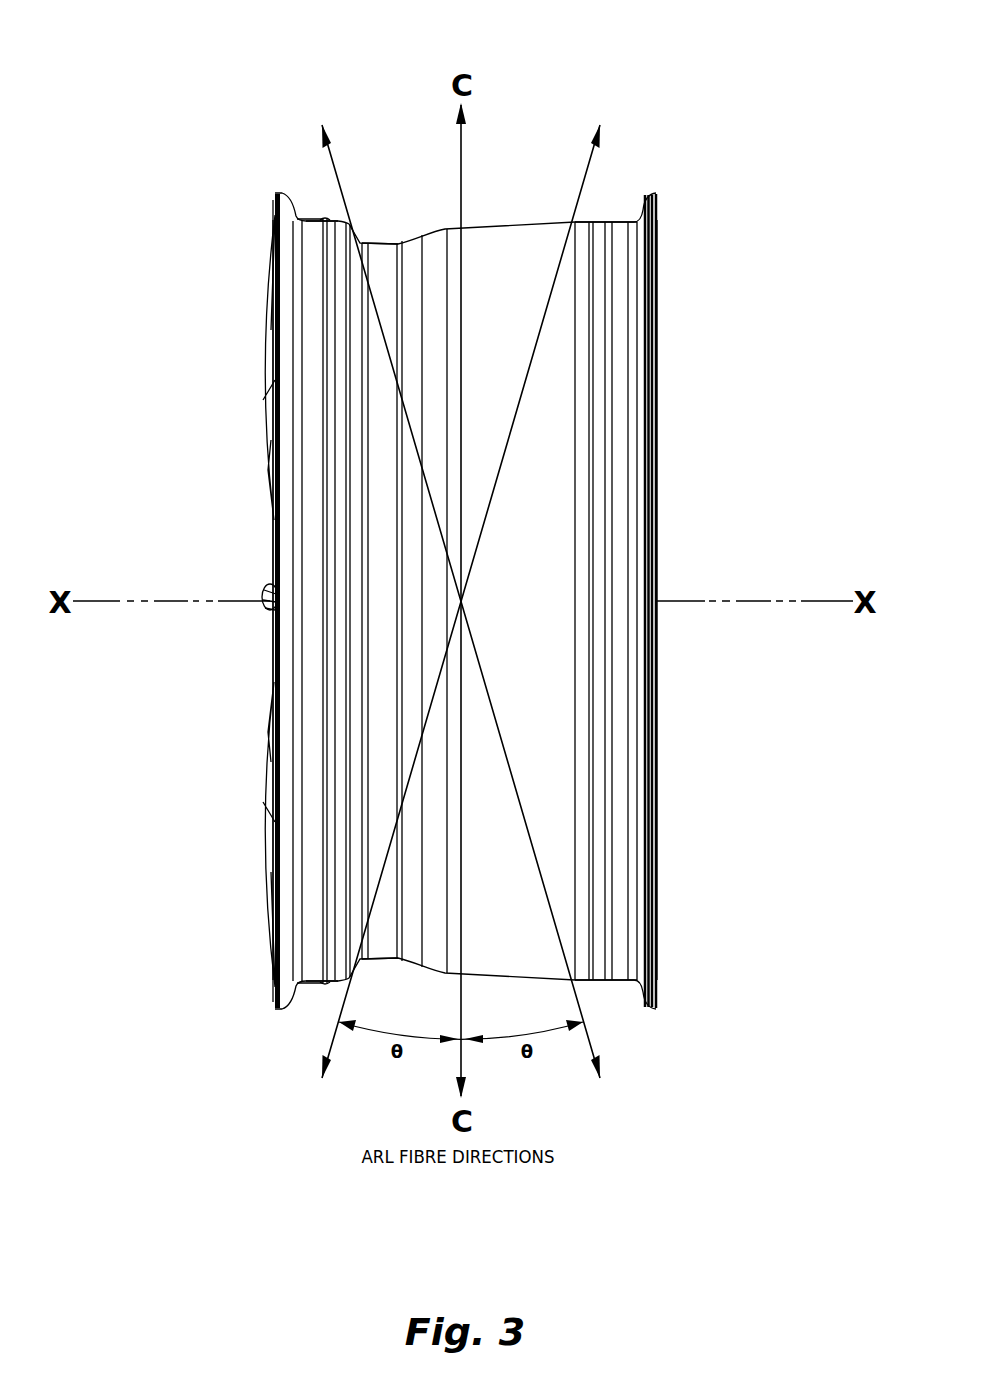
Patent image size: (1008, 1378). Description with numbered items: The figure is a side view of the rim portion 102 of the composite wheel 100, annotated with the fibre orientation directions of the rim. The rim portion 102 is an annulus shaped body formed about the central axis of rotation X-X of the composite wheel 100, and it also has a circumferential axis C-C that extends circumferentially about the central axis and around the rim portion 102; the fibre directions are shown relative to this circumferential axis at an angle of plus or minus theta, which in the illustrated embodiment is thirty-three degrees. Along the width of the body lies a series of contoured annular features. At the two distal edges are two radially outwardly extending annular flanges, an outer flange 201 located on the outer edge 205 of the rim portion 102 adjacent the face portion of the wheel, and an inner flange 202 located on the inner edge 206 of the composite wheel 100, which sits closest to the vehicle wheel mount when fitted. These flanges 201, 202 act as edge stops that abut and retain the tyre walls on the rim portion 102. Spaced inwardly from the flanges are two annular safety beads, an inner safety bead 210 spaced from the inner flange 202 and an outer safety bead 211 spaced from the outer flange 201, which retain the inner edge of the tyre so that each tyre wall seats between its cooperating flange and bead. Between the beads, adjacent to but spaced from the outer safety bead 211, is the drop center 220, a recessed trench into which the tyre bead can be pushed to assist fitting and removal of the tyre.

The composite wheel 100 is at (452, 505).
The rim portion 102 is at (313, 217).
The outer flange 201 is at (275, 192).
The inner flange 202 is at (648, 193).
The outer edge 205 is at (200, 634).
The inner edge 206 is at (710, 634).
The inner safety bead 210 is at (604, 220).
The outer safety bead 211 is at (333, 218).
The drop center 220 is at (373, 243).